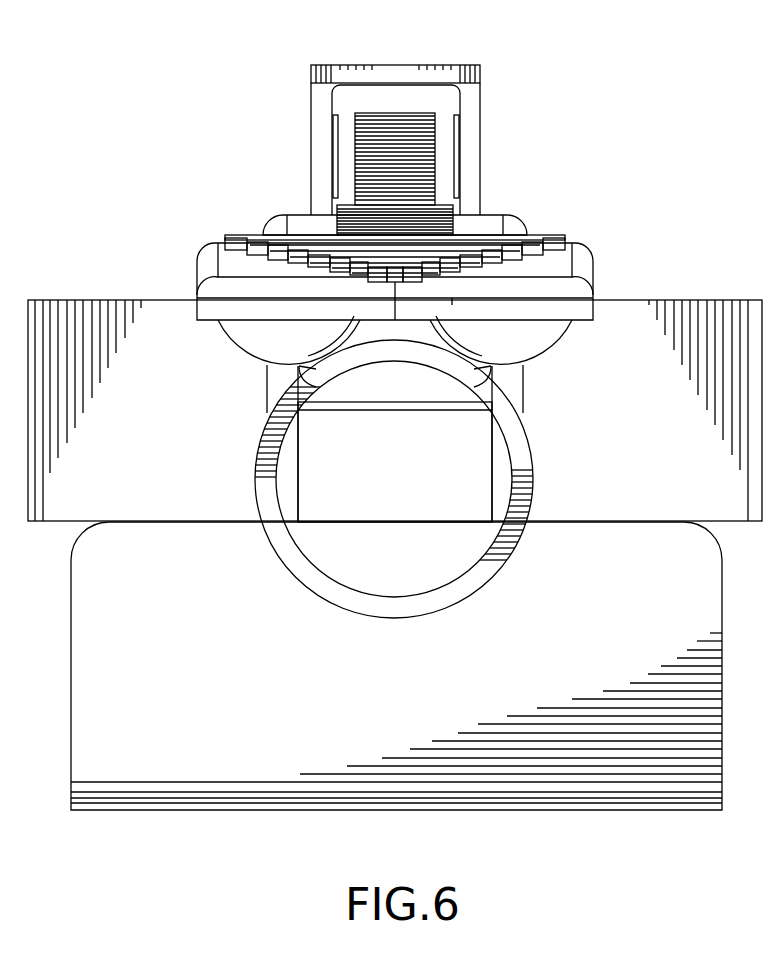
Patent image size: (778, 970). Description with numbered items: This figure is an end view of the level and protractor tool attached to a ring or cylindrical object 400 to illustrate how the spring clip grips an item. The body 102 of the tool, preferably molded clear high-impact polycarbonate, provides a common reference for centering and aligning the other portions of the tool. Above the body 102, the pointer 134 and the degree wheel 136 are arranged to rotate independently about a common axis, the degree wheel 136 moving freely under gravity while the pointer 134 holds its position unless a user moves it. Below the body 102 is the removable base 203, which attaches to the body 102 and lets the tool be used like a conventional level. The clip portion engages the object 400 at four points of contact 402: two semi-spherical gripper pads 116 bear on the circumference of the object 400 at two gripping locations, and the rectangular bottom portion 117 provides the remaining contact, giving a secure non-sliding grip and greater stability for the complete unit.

The body 102 is at (648, 496).
The gripper pads 116 is at (237, 343).
The bottom portion 117 is at (418, 502).
The pointer 134 is at (412, 69).
The degree wheel 136 is at (435, 130).
The base 203 is at (417, 743).
The cylindrical object 400 is at (455, 604).
The points of contact 402 is at (268, 378).